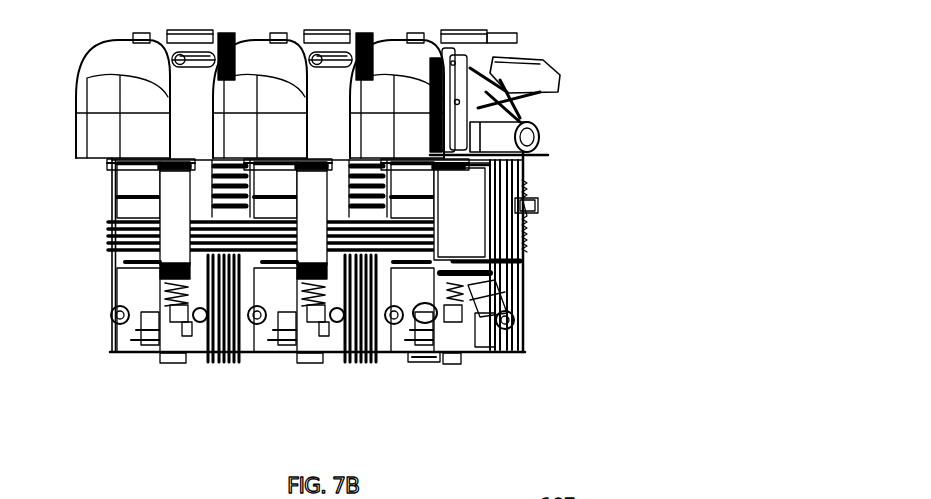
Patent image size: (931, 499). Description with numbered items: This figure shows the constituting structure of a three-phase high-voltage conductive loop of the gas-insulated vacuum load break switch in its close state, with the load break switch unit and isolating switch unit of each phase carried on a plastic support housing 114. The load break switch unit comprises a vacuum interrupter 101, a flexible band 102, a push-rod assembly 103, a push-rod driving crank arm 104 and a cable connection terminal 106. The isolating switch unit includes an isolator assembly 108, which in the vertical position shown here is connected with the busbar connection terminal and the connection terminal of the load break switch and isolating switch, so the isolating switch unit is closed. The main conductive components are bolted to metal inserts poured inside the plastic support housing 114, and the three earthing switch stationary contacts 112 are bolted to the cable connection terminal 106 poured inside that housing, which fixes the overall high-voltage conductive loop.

The vacuum interrupter 101 is at (462, 210).
The flexible band 102 is at (480, 298).
The push-rod assembly 103 is at (523, 233).
The push-rod driving crank arm 104 is at (512, 323).
The cable connection terminal 106 is at (452, 363).
The isolator assembly 108 is at (497, 72).
The earthing switch stationary contact 112 is at (428, 357).
The plastic support housing 114 is at (388, 63).